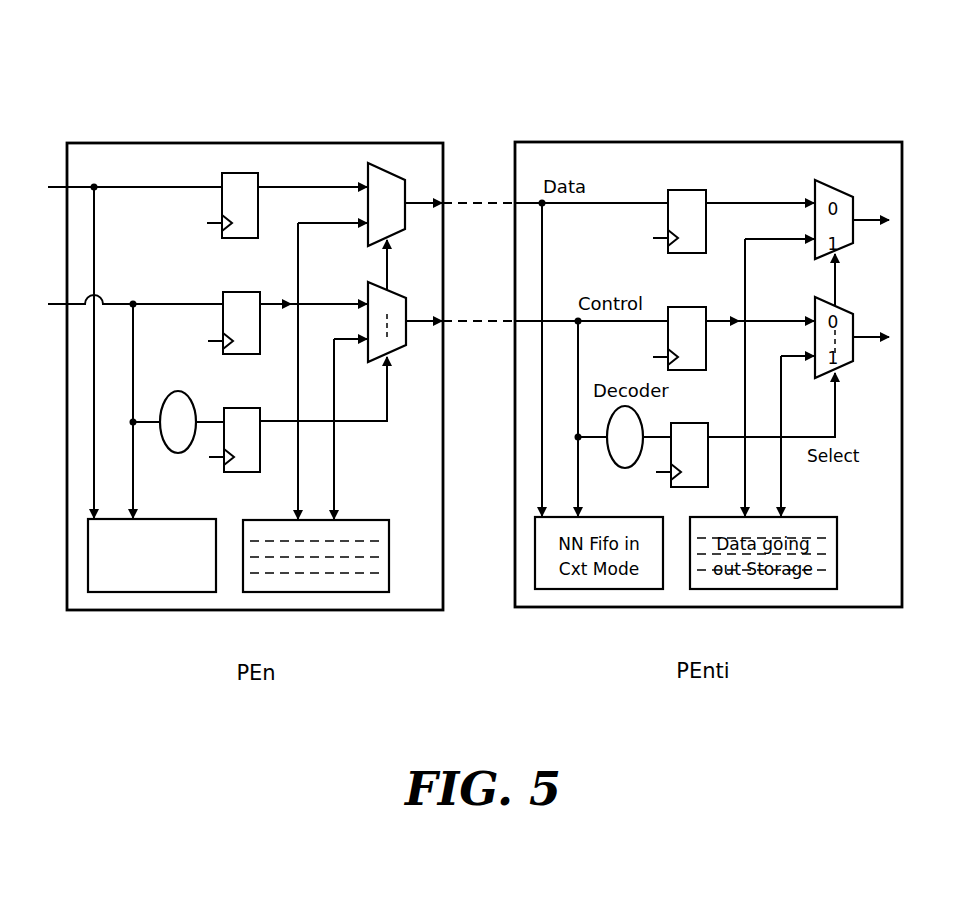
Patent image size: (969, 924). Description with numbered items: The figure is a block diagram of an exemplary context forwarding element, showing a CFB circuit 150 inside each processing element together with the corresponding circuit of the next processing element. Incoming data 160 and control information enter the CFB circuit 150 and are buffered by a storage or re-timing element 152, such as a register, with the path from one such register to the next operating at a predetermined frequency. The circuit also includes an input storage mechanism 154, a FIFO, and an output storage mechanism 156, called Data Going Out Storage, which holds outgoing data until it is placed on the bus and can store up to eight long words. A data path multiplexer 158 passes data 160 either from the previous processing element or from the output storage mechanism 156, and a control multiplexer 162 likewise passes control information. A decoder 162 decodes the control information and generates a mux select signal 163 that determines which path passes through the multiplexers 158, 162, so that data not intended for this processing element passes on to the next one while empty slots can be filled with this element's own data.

The CFB circuit 150 is at (173, 143).
The storage or re-timing element 152 is at (250, 173).
The input storage mechanism 154 is at (112, 592).
The output storage mechanism 156 is at (364, 592).
The data path multiplexer 158 is at (390, 173).
The data 160 is at (53, 187).
The control multiplexer 162 is at (397, 295).
The mux select signal 163 is at (388, 393).